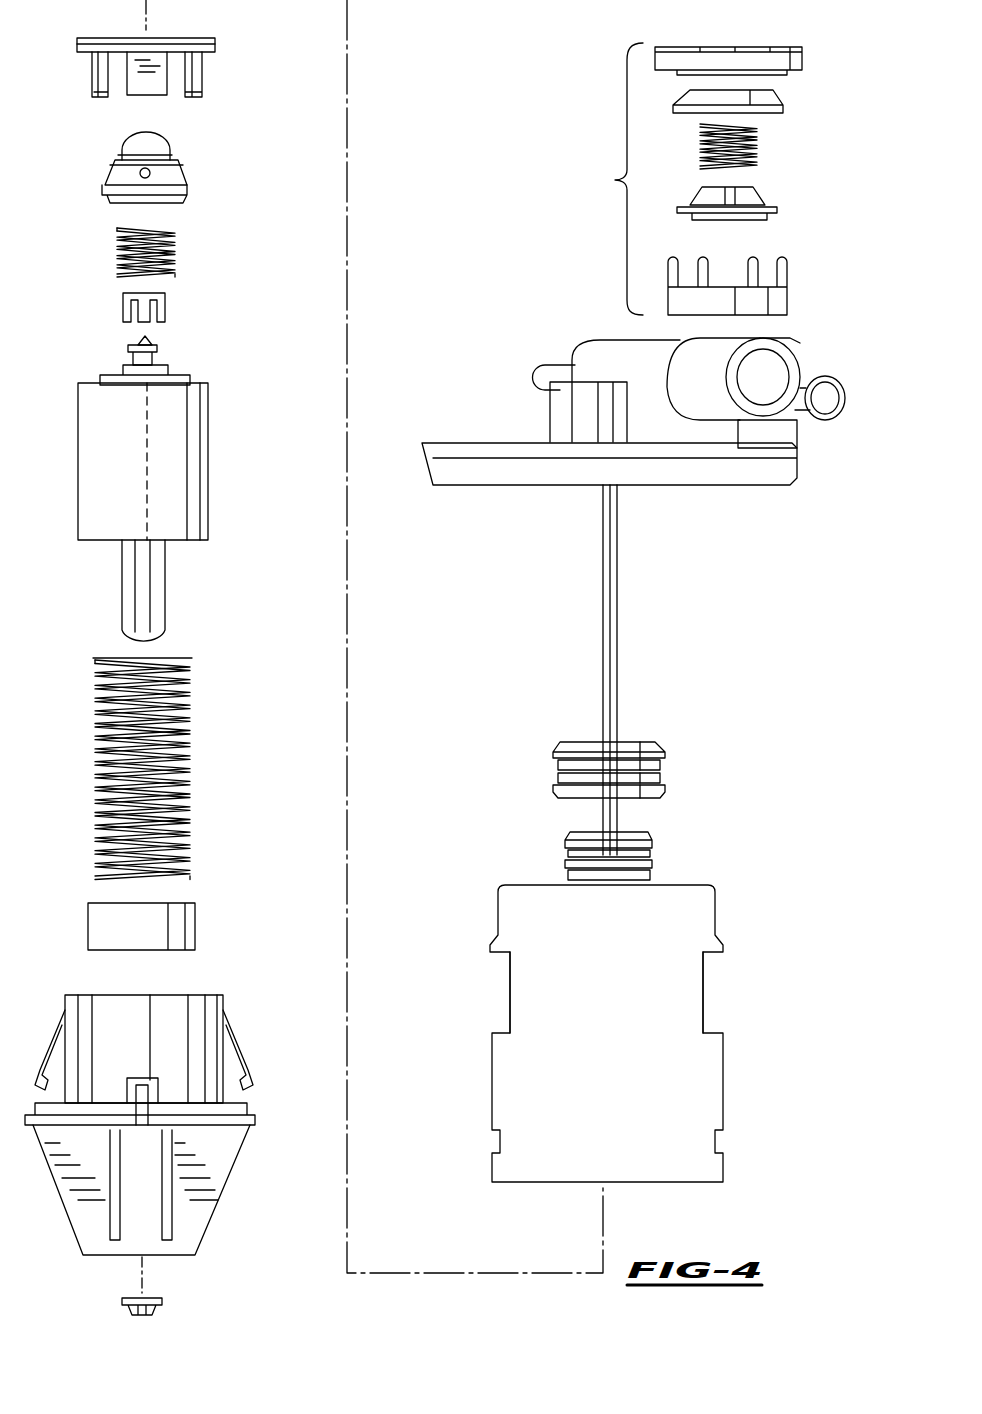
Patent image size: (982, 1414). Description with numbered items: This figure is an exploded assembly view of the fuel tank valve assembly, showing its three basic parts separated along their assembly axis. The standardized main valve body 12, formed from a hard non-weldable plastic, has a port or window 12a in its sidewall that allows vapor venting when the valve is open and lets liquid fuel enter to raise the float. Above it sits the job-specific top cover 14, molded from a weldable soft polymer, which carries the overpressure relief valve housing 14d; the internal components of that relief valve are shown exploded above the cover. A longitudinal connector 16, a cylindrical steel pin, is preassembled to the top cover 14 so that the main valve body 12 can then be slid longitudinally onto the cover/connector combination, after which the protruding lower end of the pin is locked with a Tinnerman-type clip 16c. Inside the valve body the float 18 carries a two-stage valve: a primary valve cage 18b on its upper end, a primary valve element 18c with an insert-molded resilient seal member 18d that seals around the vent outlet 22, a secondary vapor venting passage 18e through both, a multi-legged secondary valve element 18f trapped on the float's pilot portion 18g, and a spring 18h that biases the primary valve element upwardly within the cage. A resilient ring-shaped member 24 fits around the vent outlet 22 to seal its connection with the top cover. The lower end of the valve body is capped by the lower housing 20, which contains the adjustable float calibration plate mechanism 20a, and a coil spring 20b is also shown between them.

The main valve body 12 is at (703, 918).
The port or window 12a is at (703, 1000).
The top cover 14 is at (767, 477).
The overpressure relief valve housing 14d is at (685, 179).
The longitudinal connector 16 is at (608, 707).
The Tinnerman-type clip 16c is at (162, 1303).
The float 18 is at (208, 495).
The primary valve cage 18b is at (203, 80).
The primary valve element 18c is at (183, 173).
The resilient seal member 18d is at (172, 153).
The secondary vapor venting passage 18e is at (140, 173).
The secondary valve element 18f is at (165, 300).
The pilot portion 18g is at (160, 353).
The spring 18h is at (175, 253).
The lower housing 20 is at (253, 1107).
The adjustable float calibration plate mechanism 20a is at (195, 930).
The spring 20b is at (192, 785).
The vent outlet 22 is at (652, 865).
The resilient ring-shaped member 24 is at (665, 768).